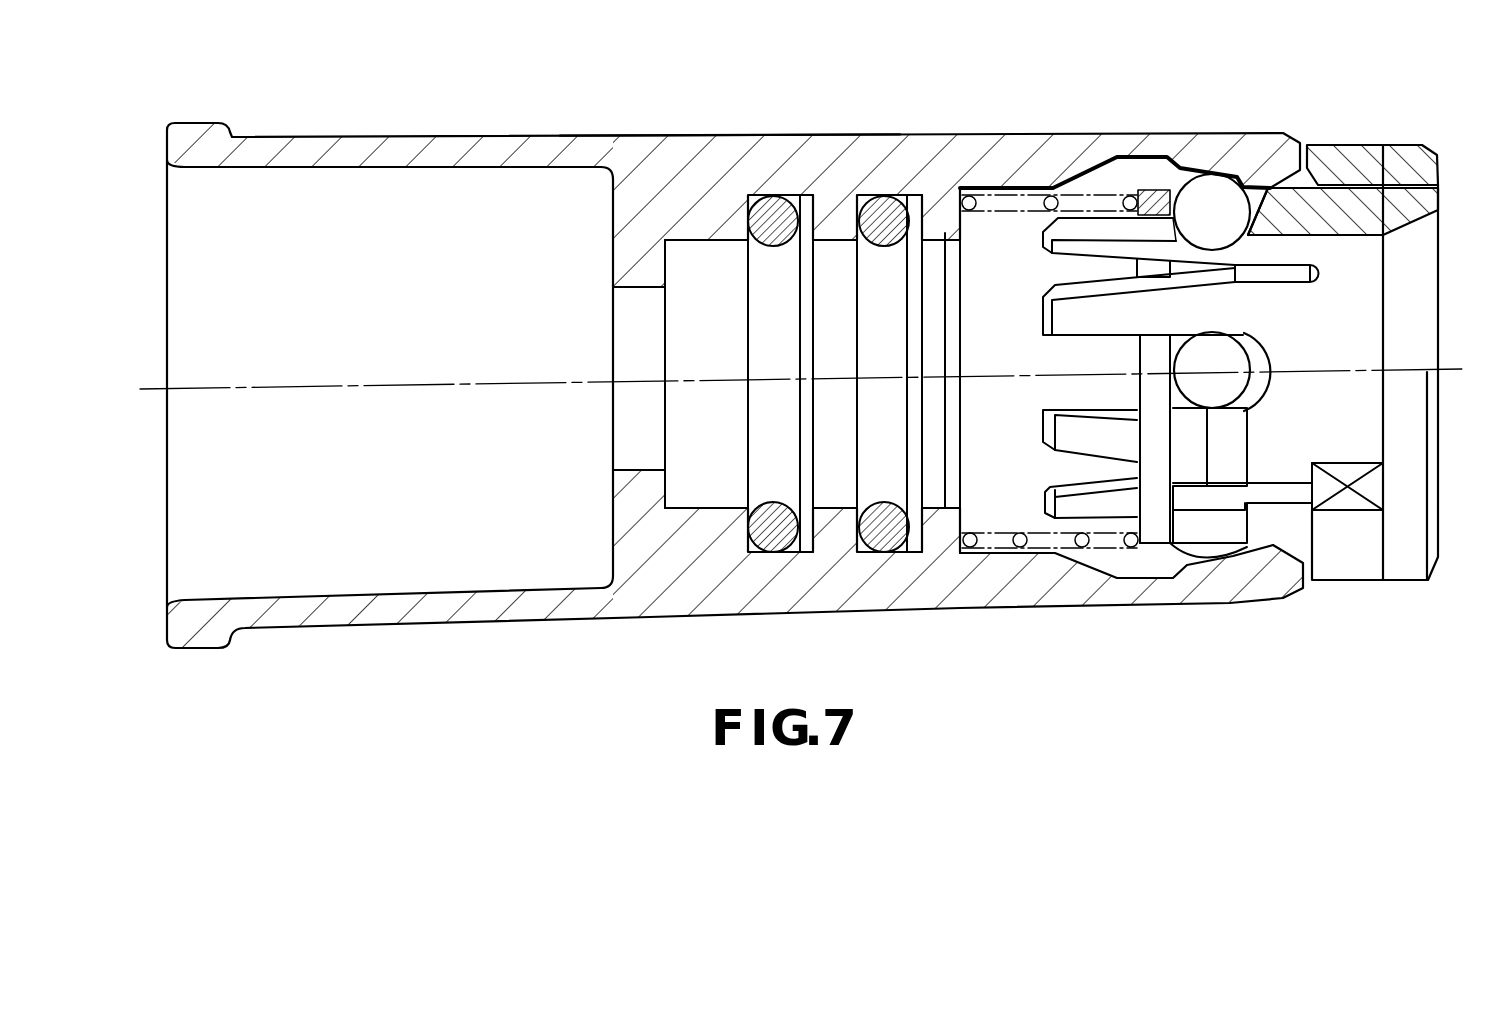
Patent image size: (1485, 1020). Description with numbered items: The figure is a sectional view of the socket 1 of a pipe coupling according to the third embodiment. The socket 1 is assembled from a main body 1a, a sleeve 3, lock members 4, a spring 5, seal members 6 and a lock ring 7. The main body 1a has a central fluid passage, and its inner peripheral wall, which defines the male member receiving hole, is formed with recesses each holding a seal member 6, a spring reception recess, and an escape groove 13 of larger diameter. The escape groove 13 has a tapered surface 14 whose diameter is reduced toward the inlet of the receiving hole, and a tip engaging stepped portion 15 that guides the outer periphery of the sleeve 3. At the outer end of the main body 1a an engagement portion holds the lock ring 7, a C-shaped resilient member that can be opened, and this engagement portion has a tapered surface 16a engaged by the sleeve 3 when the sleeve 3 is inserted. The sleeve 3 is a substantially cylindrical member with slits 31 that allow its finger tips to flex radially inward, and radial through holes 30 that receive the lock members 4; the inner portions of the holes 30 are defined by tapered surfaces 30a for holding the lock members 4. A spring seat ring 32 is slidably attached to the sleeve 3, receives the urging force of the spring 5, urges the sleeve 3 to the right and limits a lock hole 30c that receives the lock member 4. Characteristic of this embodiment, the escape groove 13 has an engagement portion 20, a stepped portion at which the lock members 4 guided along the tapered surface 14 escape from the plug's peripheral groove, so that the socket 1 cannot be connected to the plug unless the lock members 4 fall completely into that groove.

The socket 1 is at (645, 133).
The main body 1a is at (707, 145).
The sleeve 3 is at (1413, 192).
The lock member 4 is at (1258, 197).
The spring 5 is at (1013, 195).
The seal member 6 is at (777, 197).
The lock ring 7 is at (1366, 165).
The escape groove 13 is at (1112, 170).
The tapered surface 14 is at (1222, 190).
The tip engaging stepped portion 15 is at (1252, 548).
The tapered surface 16a is at (1312, 550).
The engagement portion 20 is at (1180, 168).
The radial through hole 30 is at (1072, 358).
The tapered surface 30a is at (1273, 208).
The lock hole 30c is at (1262, 195).
The slit 31 is at (1065, 272).
The spring seat ring 32 is at (1160, 535).